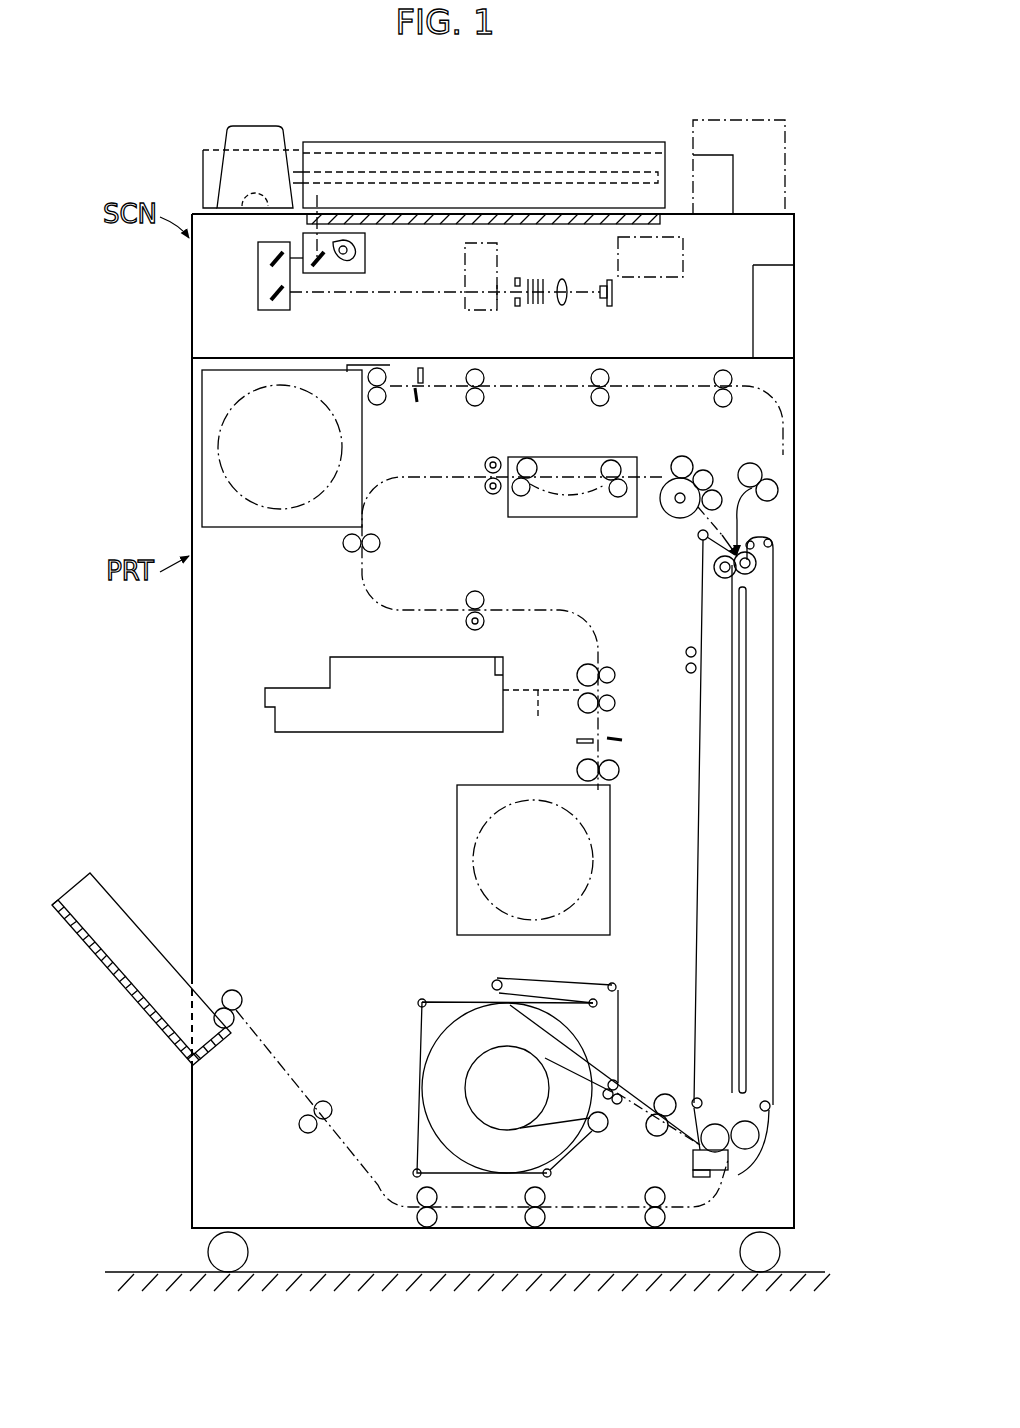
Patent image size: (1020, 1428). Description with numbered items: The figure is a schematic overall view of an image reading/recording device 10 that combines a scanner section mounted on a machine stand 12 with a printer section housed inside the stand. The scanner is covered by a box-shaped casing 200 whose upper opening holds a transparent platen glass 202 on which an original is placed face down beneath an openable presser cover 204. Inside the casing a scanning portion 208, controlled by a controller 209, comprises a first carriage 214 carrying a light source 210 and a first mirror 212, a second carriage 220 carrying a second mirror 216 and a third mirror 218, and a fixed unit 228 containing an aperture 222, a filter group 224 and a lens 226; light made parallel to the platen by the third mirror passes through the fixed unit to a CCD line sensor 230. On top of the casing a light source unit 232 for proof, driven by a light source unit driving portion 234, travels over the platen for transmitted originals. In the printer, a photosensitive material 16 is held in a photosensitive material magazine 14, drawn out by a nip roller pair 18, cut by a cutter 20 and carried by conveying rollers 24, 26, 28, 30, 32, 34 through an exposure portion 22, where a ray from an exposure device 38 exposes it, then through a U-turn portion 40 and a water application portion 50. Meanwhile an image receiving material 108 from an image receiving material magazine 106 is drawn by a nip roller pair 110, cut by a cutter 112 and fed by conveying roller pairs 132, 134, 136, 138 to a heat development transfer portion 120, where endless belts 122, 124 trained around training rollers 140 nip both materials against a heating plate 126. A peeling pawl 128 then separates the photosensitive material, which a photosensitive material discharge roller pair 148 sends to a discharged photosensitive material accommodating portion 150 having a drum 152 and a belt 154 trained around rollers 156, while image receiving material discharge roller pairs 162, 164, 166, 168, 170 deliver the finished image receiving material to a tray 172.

The image reading/recording device 10 is at (158, 345).
The machine stand 12 is at (191, 1100).
The photosensitive material magazine 14 is at (457, 900).
The photosensitive material 16 is at (488, 823).
The nip roller pair 18 is at (620, 771).
The cutter 20 is at (623, 739).
The exposure portion 22 is at (615, 694).
The conveying roller 24 is at (616, 703).
The conveying roller 26 is at (611, 667).
The conveying roller 28 is at (492, 598).
The conveying roller 30 is at (376, 552).
The conveying roller 32 is at (492, 456).
The conveying roller 34 is at (713, 470).
The exposure device 38 is at (345, 732).
The U-turn portion 40 is at (360, 600).
The water application portion 50 is at (596, 541).
The image receiving material magazine 106 is at (202, 453).
The image receiving material 108 is at (278, 520).
The nip roller pair 110 is at (374, 368).
The cutter 112 is at (415, 398).
The heat development transfer portion 120 is at (779, 850).
The endless belt 122 is at (774, 745).
The endless belt 124 is at (695, 820).
The heating plate 126 is at (746, 688).
The peeling pawl 128 is at (693, 1160).
The conveying roller pair 132 is at (480, 368).
The conveying roller pair 134 is at (607, 403).
The conveying roller pair 136 is at (722, 401).
The conveying roller pair 138 is at (770, 490).
The training rollers 140 is at (757, 563).
The photosensitive material discharge roller pair 148 is at (660, 1095).
The discharged photosensitive material accommodating portion 150 is at (409, 1040).
The drum 152 is at (529, 1097).
The belt 154 is at (417, 1076).
The rollers 156 is at (614, 990).
The image receiving material discharge roller pair 162 is at (661, 1224).
The image receiving material discharge roller pair 164 is at (541, 1224).
The image receiving material discharge roller pair 166 is at (437, 1226).
The image receiving material discharge roller pair 168 is at (305, 1133).
The image receiving material discharge roller pair 170 is at (250, 999).
The tray 172 is at (92, 955).
The casing 200 is at (793, 238).
The platen glass 202 is at (548, 210).
The presser cover 204 is at (466, 142).
The scanning portion 208 is at (644, 328).
The controller 209 is at (790, 317).
The light source 210 is at (356, 249).
The first mirror 212 is at (325, 270).
The first carriage 214 is at (368, 270).
The second mirror 216 is at (273, 255).
The third mirror 218 is at (278, 300).
The second carriage 220 is at (255, 278).
The aperture 222 is at (518, 276).
The filter group 224 is at (541, 276).
The lens 226 is at (570, 308).
The fixed unit 228 is at (581, 277).
The CCD line sensor 230 is at (617, 292).
The light source unit for proof 232 is at (279, 123).
The light source unit driving portion 234 is at (205, 146).